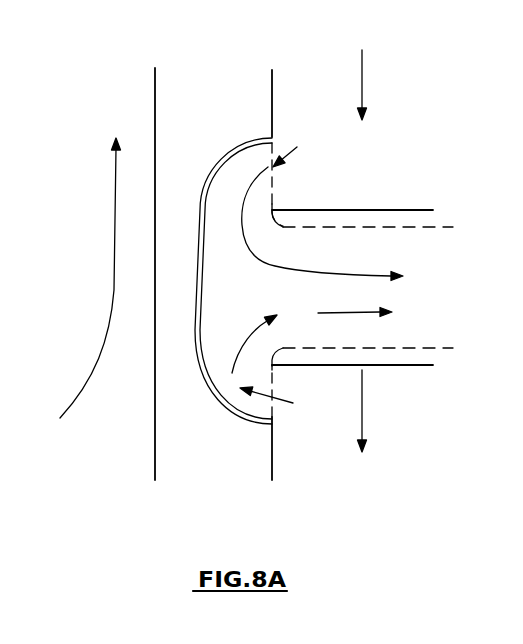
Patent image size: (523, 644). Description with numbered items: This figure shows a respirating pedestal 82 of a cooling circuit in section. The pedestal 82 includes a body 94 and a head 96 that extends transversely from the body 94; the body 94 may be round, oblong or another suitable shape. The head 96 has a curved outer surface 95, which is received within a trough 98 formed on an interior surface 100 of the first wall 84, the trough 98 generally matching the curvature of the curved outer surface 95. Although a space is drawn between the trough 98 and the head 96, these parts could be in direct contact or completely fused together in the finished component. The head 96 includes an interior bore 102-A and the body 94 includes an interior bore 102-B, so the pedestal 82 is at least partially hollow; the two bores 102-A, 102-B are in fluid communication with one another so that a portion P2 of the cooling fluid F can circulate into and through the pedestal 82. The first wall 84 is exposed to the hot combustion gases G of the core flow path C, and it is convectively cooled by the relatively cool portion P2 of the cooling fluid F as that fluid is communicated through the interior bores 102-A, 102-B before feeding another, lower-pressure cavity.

The pedestal 82 is at (306, 138).
The first wall 84 is at (180, 462).
The body 94 is at (380, 210).
The curved outer surface 95 is at (204, 207).
The head 96 is at (256, 127).
The trough 98 is at (233, 436).
The interior surface 100 is at (274, 82).
The interior bore 102-A is at (239, 175).
The interior bore 102-B is at (331, 232).
The core flow path C is at (81, 145).
The hot combustion gases G is at (115, 222).
The cooling fluid F is at (364, 90).
The portion of the cooling fluid P2 is at (262, 263).